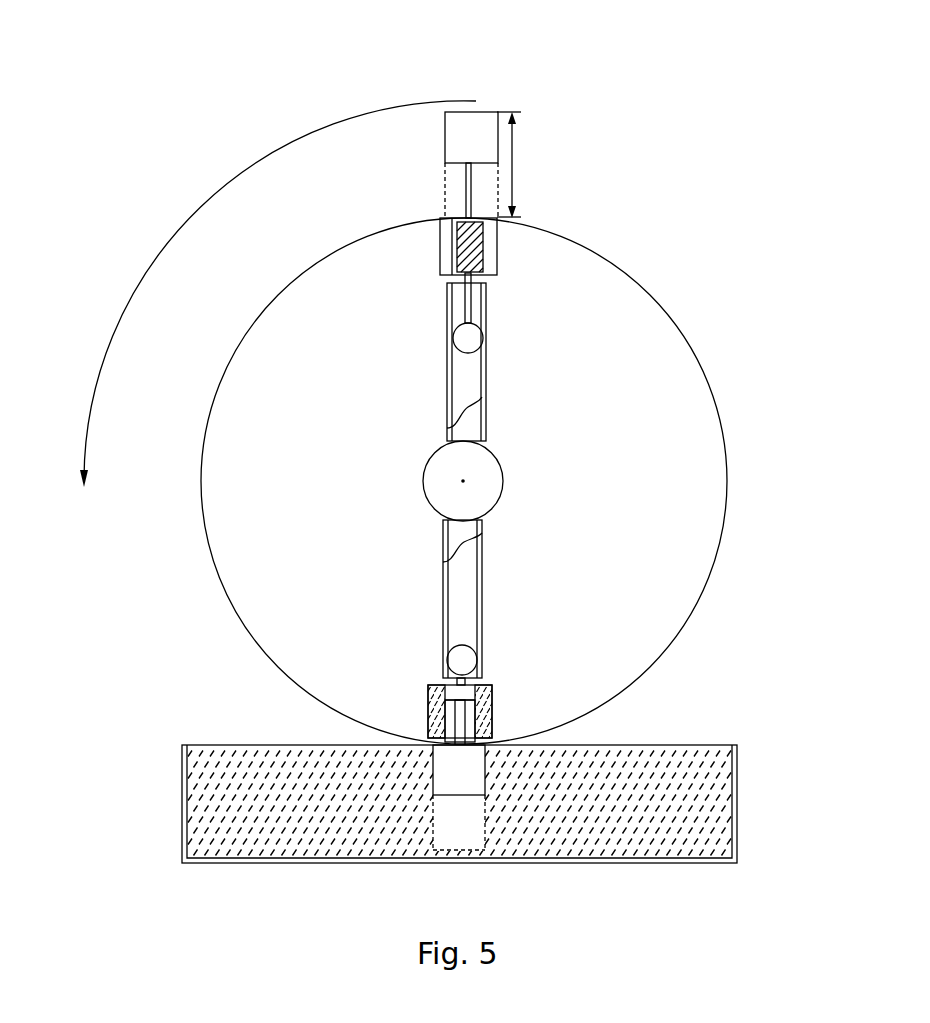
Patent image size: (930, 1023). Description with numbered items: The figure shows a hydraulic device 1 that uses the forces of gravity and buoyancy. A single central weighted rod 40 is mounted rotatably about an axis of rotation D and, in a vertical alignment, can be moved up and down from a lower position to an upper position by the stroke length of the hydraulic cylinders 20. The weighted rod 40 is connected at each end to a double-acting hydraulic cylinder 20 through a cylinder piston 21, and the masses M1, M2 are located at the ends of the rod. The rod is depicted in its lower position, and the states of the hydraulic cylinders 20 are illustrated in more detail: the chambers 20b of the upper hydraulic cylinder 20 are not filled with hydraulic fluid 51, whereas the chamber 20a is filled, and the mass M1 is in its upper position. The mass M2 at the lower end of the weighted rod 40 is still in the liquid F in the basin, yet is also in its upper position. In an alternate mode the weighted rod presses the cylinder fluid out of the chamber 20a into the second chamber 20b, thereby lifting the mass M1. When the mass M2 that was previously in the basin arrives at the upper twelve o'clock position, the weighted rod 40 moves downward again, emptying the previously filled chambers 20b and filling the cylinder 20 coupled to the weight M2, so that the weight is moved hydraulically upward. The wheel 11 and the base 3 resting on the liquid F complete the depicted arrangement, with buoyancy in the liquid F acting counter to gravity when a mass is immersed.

The hydraulic device 1 is at (658, 214).
The base 3 is at (182, 862).
The rotor wheel 11 is at (682, 602).
The hydraulic cylinder 20 is at (404, 278).
The cylinder chamber 20a is at (478, 232).
The cylinder chamber 20b is at (440, 240).
The cylinder piston 21 is at (470, 190).
The weighted rod 40 is at (463, 383).
The hydraulic fluid 51 is at (495, 262).
The axis of rotation D is at (455, 488).
The liquid F is at (648, 825).
The mass M1 is at (470, 128).
The mass M2 is at (470, 765).